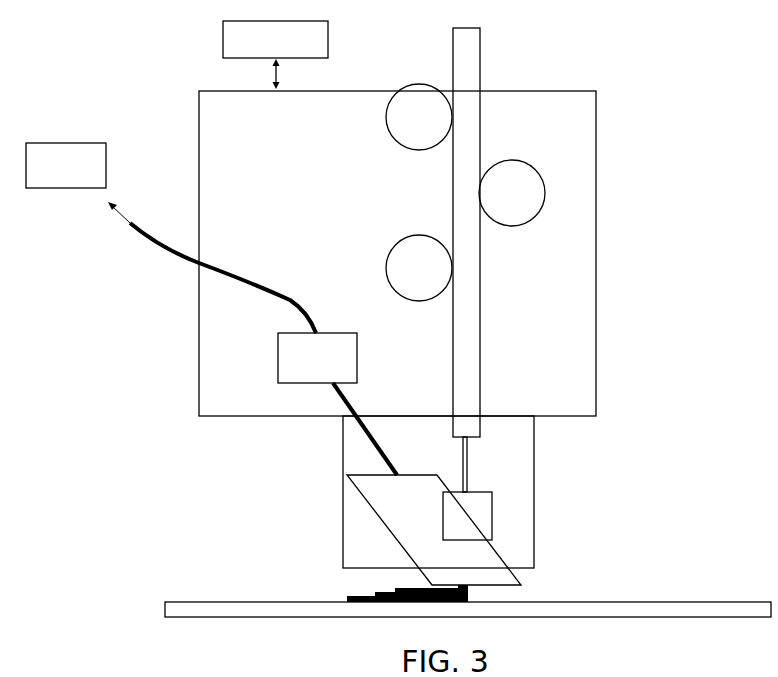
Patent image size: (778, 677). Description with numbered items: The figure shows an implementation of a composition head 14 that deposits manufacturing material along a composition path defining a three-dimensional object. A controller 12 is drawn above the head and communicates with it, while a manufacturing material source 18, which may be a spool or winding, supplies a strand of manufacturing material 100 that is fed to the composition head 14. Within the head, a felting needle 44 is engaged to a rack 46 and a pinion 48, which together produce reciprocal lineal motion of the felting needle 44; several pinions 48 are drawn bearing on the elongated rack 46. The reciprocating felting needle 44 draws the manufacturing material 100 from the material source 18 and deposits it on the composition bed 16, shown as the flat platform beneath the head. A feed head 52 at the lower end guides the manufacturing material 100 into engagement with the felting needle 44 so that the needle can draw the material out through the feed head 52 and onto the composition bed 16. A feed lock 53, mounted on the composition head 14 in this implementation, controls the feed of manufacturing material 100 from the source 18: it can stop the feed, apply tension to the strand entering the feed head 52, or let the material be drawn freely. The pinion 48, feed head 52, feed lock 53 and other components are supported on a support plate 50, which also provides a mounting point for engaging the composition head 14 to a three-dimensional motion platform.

The controller 12 is at (328, 27).
The composition head 14 is at (458, 306).
The composition bed 16 is at (734, 590).
The manufacturing material source 18 is at (66, 165).
The felting needle 44 is at (468, 455).
The rack 46 is at (452, 198).
The pinion 48 is at (507, 159).
The support plate 50 is at (397, 253).
The feed head 52 is at (492, 506).
The feed lock 53 is at (317, 358).
The manufacturing material 100 is at (168, 255).